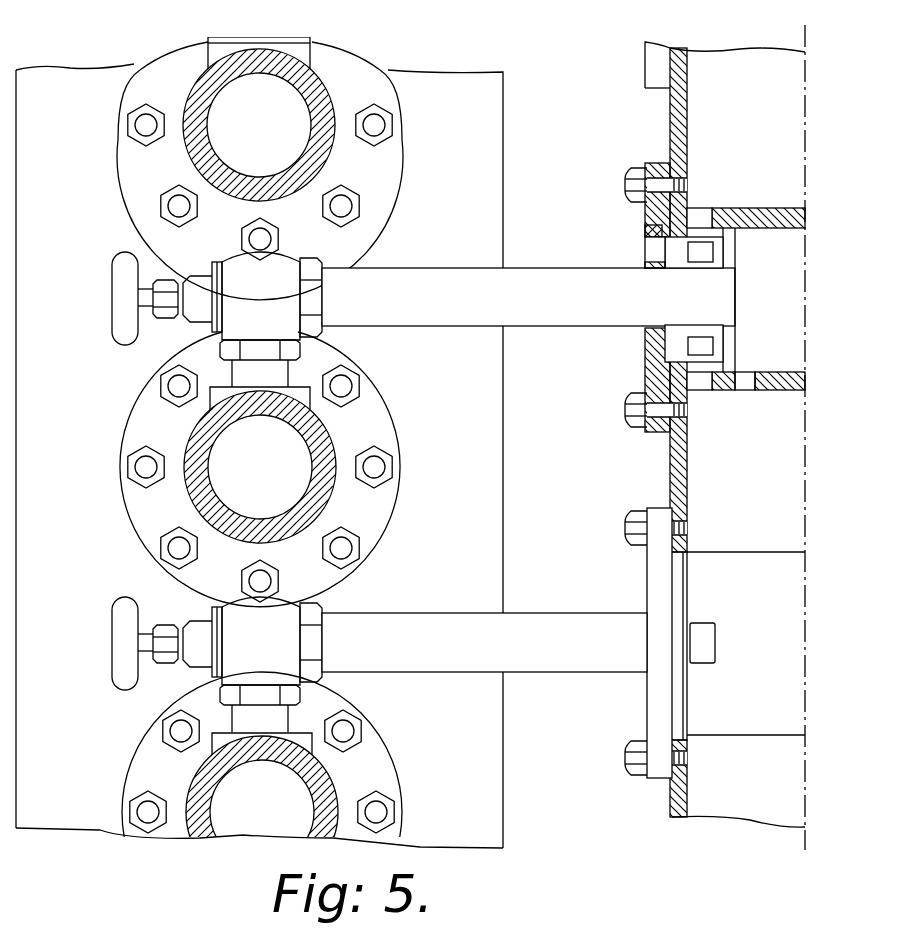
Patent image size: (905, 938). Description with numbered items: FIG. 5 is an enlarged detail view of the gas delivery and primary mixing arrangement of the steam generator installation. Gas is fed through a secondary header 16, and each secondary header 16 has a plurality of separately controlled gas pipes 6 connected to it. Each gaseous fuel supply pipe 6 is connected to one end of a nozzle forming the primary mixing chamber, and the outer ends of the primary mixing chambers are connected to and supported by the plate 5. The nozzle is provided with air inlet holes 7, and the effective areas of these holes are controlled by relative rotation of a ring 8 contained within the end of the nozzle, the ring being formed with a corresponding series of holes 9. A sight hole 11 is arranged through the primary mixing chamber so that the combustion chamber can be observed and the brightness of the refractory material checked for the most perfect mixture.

The plate 5 is at (688, 463).
The gaseous fuel supply pipe 6 is at (549, 312).
The air inlet holes 7 is at (697, 212).
The ring 8 is at (645, 228).
The holes 9 is at (702, 365).
The sight hole 11 is at (653, 248).
The secondary header 16 is at (313, 113).